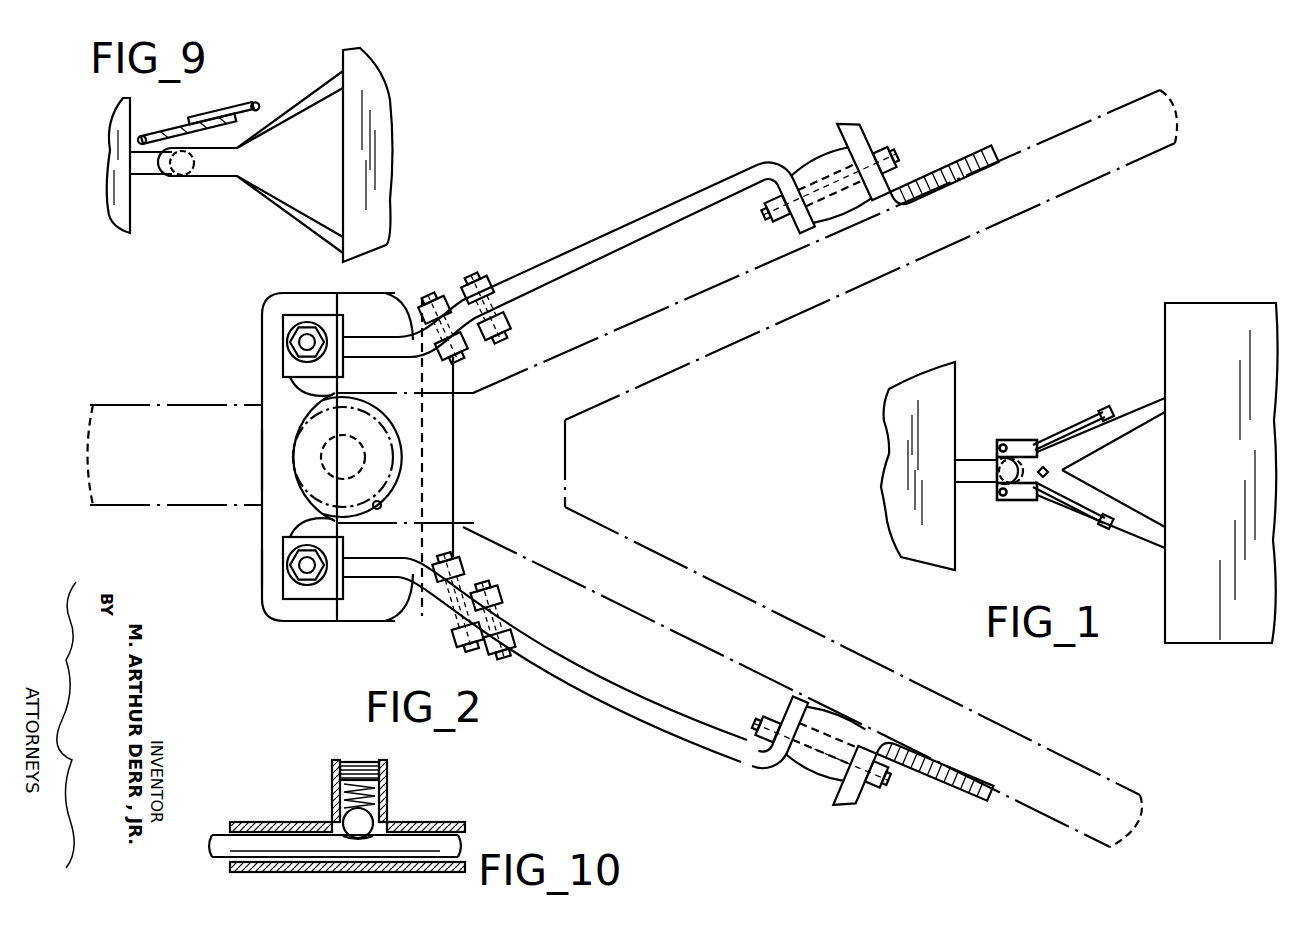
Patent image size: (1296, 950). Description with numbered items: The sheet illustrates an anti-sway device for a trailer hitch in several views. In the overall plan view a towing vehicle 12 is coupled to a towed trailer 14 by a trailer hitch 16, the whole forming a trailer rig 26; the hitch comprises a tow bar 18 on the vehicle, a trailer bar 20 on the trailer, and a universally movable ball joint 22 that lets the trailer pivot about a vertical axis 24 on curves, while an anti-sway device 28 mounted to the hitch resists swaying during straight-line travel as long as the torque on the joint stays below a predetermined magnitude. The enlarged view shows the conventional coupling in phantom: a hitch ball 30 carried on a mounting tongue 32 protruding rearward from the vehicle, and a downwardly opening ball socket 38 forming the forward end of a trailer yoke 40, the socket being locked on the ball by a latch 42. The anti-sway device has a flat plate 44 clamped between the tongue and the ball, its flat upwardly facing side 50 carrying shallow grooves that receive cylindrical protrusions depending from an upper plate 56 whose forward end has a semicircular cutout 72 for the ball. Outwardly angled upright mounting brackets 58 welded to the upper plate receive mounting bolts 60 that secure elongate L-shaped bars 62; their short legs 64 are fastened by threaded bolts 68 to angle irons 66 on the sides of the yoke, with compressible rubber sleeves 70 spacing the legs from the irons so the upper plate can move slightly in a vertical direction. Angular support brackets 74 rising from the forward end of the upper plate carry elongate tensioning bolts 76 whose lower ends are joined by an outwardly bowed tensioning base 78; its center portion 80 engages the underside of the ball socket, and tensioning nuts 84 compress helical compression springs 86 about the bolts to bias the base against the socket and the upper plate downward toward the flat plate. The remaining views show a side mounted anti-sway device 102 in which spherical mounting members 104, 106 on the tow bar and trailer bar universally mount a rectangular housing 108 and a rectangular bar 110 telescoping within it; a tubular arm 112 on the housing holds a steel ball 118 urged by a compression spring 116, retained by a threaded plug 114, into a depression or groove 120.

In FIG. 1, the towing vehicle 12 is at (958, 396).
In FIG. 1, the towed trailer 14 is at (1217, 302).
In FIG. 1, the trailer hitch 16 is at (1057, 520).
In FIG. 1, the tow bar 18 is at (970, 482).
In FIG. 9, the tow bar 18 is at (143, 176).
In FIG. 1, the trailer bar 20 is at (1146, 532).
In FIG. 9, the trailer bar 20 is at (260, 202).
In FIG. 1, the ball joint 22 is at (1026, 452).
In FIG. 2, the vertical axis 24 is at (346, 456).
In FIG. 1, the vertical axis 24 is at (1011, 459).
In FIG. 1, the trailer rig 26 is at (1121, 333).
In FIG. 2, the anti-sway device 28 is at (226, 336).
In FIG. 1, the anti-sway device 28 is at (1024, 506).
In FIG. 2, the hitch ball 30 is at (368, 394).
In FIG. 2, the mounting tongue 32 is at (152, 402).
In FIG. 2, the ball socket 38 is at (290, 430).
In FIG. 2, the trailer yoke 40 is at (797, 331).
In FIG. 1, the latch 42 is at (1050, 471).
In FIG. 2, the flat plate 44 is at (266, 597).
In FIG. 2, the upwardly facing side 50 is at (262, 567).
In FIG. 2, the upper plate 56 is at (445, 475).
In FIG. 2, the upright mounting brackets 58 is at (391, 340).
In FIG. 2, the mounting bolts 60 is at (470, 280).
In FIG. 2, the L-shaped bars 62 is at (623, 228).
In FIG. 2, the short legs 64 is at (778, 175).
In FIG. 2, the angle irons 66 is at (845, 124).
In FIG. 2, the threaded bolts 68 is at (886, 155).
In FIG. 2, the compressible rubber sleeve 70 is at (822, 172).
In FIG. 2, the semicircular cutout 72 is at (378, 509).
In FIG. 2, the angular support brackets 74 is at (321, 599).
In FIG. 2, the tensioning bolts 76 is at (297, 339).
In FIG. 2, the tensioning base 78 is at (296, 388).
In FIG. 2, the center portion 80 is at (262, 462).
In FIG. 2, the tensioning nuts 84 is at (291, 553).
In FIG. 2, the helical compression springs 86 is at (298, 322).
In FIG. 9, the side mounted anti-sway device 102 is at (233, 128).
In FIG. 9, the spherical mounting member 104 is at (175, 169).
In FIG. 9, the spherical mounting member 106 is at (288, 100).
In FIG. 9, the rectangular housing 108 is at (181, 104).
In FIG. 10, the rectangular housing 108 is at (428, 824).
In FIG. 9, the rectangular bar 110 is at (230, 101).
In FIG. 10, the rectangular bar 110 is at (446, 836).
In FIG. 10, the tubular arm 112 is at (388, 786).
In FIG. 10, the threaded plug 114 is at (351, 762).
In FIG. 10, the compression spring 116 is at (341, 786).
In FIG. 10, the steel ball 118 is at (344, 817).
In FIG. 10, the depression or groove 120 is at (373, 838).